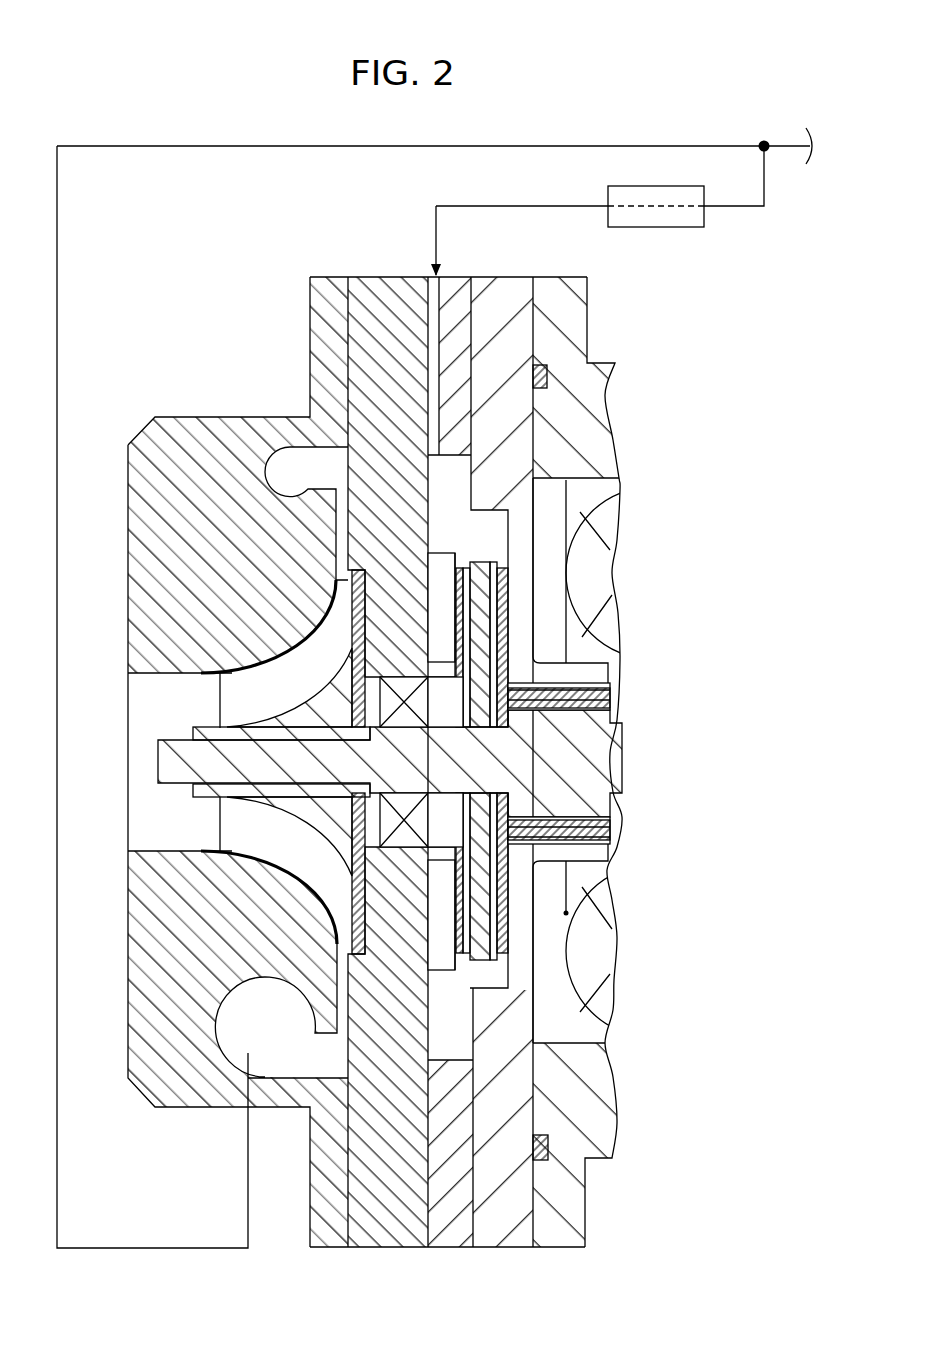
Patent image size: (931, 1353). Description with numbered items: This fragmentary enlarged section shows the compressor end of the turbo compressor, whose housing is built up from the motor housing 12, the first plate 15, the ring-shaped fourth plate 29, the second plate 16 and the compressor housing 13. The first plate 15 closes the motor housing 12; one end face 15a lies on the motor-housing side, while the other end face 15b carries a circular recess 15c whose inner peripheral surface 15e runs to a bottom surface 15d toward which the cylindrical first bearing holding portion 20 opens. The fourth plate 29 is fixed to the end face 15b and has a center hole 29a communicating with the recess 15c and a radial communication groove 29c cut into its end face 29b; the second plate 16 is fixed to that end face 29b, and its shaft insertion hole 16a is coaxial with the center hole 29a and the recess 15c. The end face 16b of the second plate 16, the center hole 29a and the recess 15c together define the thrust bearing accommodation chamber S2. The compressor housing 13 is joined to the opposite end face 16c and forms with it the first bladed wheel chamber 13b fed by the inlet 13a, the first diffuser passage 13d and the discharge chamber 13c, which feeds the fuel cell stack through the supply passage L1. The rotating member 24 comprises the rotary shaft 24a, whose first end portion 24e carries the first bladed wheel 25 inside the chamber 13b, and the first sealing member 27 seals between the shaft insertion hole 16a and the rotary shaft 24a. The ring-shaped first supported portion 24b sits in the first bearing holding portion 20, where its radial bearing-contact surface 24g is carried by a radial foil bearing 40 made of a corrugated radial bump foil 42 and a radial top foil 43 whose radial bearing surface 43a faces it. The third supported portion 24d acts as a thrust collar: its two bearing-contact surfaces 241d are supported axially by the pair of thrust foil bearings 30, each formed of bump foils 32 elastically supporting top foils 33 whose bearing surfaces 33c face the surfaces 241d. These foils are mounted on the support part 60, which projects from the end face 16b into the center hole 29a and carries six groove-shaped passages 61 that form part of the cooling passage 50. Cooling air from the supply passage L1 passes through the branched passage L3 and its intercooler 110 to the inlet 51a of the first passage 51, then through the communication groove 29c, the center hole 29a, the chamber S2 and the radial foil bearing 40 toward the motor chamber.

The motor housing 12 is at (538, 290).
The compressor housing 13 is at (194, 426).
The inlet 13a is at (150, 678).
The first bladed wheel chamber 13b is at (285, 699).
The discharge chamber 13c is at (290, 1034).
The first diffuser passage 13d is at (342, 975).
The first plate 15 is at (484, 295).
The stator lower end 15a is at (540, 1180).
The end face 15b is at (500, 1178).
The recess 15c is at (482, 496).
The bottom surface 15d is at (503, 996).
The inner peripheral surface 15e is at (457, 988).
The second plate 16 is at (392, 288).
The shaft insertion hole 16a is at (403, 840).
The end face 16b is at (390, 1215).
The end face 16c is at (440, 1156).
The first bearing holding portion 20 is at (610, 838).
The rotating member 24 is at (616, 723).
The rotary shaft 24a is at (617, 749).
The first supported portion 24b is at (617, 800).
The third supported portion 24d is at (478, 731).
The first end portion 24e is at (165, 752).
The radial bearing-contact surface 24g is at (622, 850).
The first bladed wheel 25 is at (284, 794).
The first sealing member 27 is at (400, 731).
The fourth plate 29 is at (447, 1123).
The center hole 29a is at (427, 456).
The end face 29b is at (400, 420).
The communication groove 29c is at (425, 375).
The thrust foil bearing 30 is at (452, 918).
The bump foil 32 is at (483, 600).
The top foil 33 is at (441, 554).
The bearing surface 33c is at (480, 625).
The radial foil bearing 40 is at (570, 677).
The radial bump foil 42 is at (580, 690).
The radial top foil 43 is at (590, 700).
The radial bearing surface 43a is at (560, 713).
The cooling passage 50 is at (420, 286).
The first passage 51 is at (425, 320).
The inlet 51a is at (431, 270).
The support part 60 is at (454, 720).
The passage 61 is at (437, 571).
The intercooler 110 is at (660, 228).
The bearing-contact surface 241d is at (446, 925).
The supply passage L1 is at (430, 146).
The branched passage L3 is at (740, 209).
The thrust bearing accommodation chamber S2 is at (520, 506).